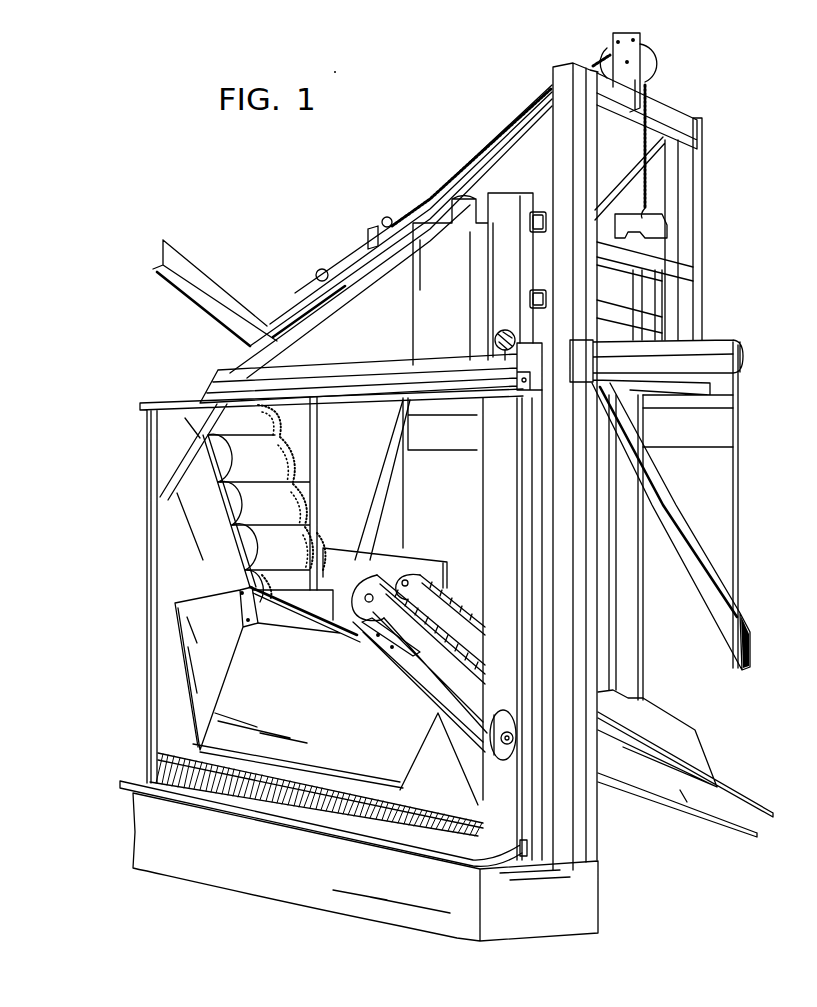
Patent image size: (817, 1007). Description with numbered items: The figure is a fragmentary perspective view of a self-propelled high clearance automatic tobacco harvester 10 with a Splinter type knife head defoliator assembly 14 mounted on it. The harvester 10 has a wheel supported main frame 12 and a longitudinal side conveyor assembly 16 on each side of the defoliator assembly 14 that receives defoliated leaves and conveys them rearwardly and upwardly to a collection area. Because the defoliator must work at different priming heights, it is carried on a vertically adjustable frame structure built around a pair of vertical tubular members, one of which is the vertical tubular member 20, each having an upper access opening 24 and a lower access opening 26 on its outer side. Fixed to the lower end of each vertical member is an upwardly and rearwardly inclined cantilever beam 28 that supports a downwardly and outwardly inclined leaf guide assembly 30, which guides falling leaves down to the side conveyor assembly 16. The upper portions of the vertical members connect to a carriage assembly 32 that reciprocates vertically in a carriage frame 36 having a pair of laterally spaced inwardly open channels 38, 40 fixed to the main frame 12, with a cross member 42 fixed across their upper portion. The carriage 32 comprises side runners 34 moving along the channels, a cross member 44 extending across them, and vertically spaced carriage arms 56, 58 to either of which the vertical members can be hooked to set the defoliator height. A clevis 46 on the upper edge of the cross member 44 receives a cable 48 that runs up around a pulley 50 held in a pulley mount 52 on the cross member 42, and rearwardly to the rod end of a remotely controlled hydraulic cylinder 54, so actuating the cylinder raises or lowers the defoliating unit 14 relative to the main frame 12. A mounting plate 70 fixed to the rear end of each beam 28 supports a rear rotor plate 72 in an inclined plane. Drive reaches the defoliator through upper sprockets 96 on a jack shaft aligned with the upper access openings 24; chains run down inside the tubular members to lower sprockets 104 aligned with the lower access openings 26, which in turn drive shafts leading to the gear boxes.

The tobacco harvester 10 is at (270, 212).
The main frame 12 is at (300, 373).
The defoliator assembly 14 is at (467, 578).
The longitudinal side conveyor assembly 16 is at (300, 817).
The vertical tubular member 20 is at (503, 464).
The upper access opening 24 is at (500, 336).
The lower access opening 26 is at (507, 757).
The cantilever beam 28 is at (433, 690).
The leaf guide assembly 30 is at (255, 738).
The carriage assembly 32 is at (705, 249).
The side runner 34 is at (680, 332).
The carriage frame 36 is at (714, 177).
The channel 38 is at (705, 204).
The channel 40 is at (560, 142).
The cross member 42 is at (673, 123).
The cross member 44 is at (685, 270).
The clevis 46 is at (655, 230).
The cable 48 is at (600, 62).
The pulley 50 is at (640, 58).
The pulley mount 52 is at (627, 85).
The hydraulic cylinder 54 is at (302, 297).
The carriage arm 56 is at (533, 293).
The carriage arm 58 is at (463, 183).
The mounting plate 70 is at (397, 648).
The rear rotor plate 72 is at (340, 636).
The upper sprocket 96 is at (505, 330).
The lower sprocket 104 is at (560, 780).